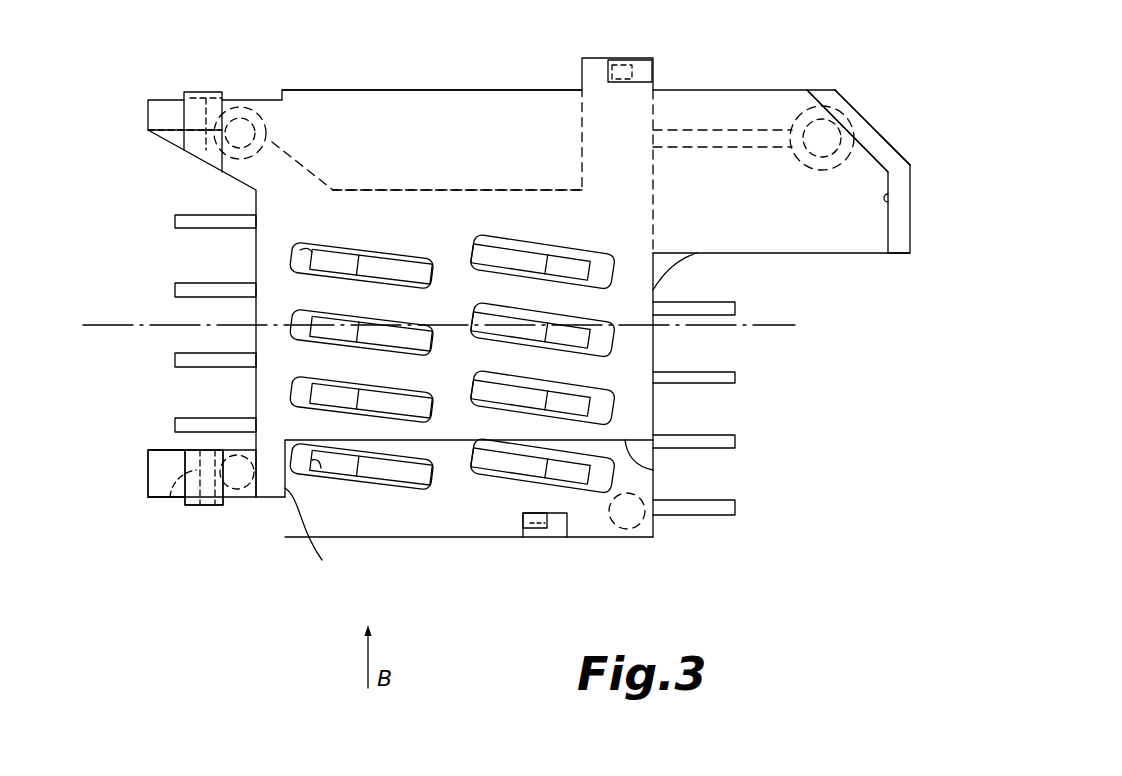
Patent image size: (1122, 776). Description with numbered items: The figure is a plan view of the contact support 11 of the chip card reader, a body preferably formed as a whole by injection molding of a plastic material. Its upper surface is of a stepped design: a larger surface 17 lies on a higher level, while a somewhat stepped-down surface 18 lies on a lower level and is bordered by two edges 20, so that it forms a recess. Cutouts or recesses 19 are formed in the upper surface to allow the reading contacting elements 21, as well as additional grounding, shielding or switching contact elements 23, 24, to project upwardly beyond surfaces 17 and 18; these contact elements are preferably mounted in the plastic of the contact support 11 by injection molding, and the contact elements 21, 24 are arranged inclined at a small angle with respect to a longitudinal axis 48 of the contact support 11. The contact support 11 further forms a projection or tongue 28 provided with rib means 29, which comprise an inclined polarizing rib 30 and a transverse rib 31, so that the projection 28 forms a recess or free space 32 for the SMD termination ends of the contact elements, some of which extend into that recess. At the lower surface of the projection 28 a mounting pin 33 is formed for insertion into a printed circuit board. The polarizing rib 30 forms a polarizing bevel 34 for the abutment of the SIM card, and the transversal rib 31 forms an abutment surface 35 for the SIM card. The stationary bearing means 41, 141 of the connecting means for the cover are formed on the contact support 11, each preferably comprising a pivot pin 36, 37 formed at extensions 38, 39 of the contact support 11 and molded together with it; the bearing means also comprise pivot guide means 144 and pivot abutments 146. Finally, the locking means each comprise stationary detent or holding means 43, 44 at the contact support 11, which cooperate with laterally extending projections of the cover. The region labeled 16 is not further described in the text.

The contact support 11 is at (462, 88).
The housing interior cavity 16 is at (512, 120).
The larger surface 17 is at (395, 108).
The stepped down surface 18 is at (450, 523).
The cutouts or recesses 19 is at (307, 247).
The edges 20 is at (717, 478).
The reading contacting elements 21 is at (388, 263).
The grounding, shielding, or switching contact element 23 is at (710, 508).
The grounding, shielding, or switching contact element 24 is at (197, 423).
The projection or tongue 28 is at (718, 102).
The rib means 29 is at (915, 152).
The inclined rib 30 is at (892, 147).
The transverse rib 31 is at (898, 242).
The recess or free space 32 is at (688, 262).
The mounting pin 33 is at (825, 135).
The polarizing bevel 34 is at (877, 148).
The abutment surface 35 is at (892, 198).
The pivot pin 36 is at (195, 492).
The pivot pin 37 is at (197, 107).
The extension 38 is at (160, 477).
The extension 39 is at (148, 117).
The first or stationary bearing means 41 is at (223, 82).
The stationary detent or holding means 43 is at (645, 60).
The stationary detent or holding means 44 is at (552, 535).
The longitudinal axis 48 is at (112, 326).
The first or stationary bearing means 141 is at (181, 542).
The pivot guide means 144 is at (138, 468).
The pivot abutment 146 is at (160, 503).